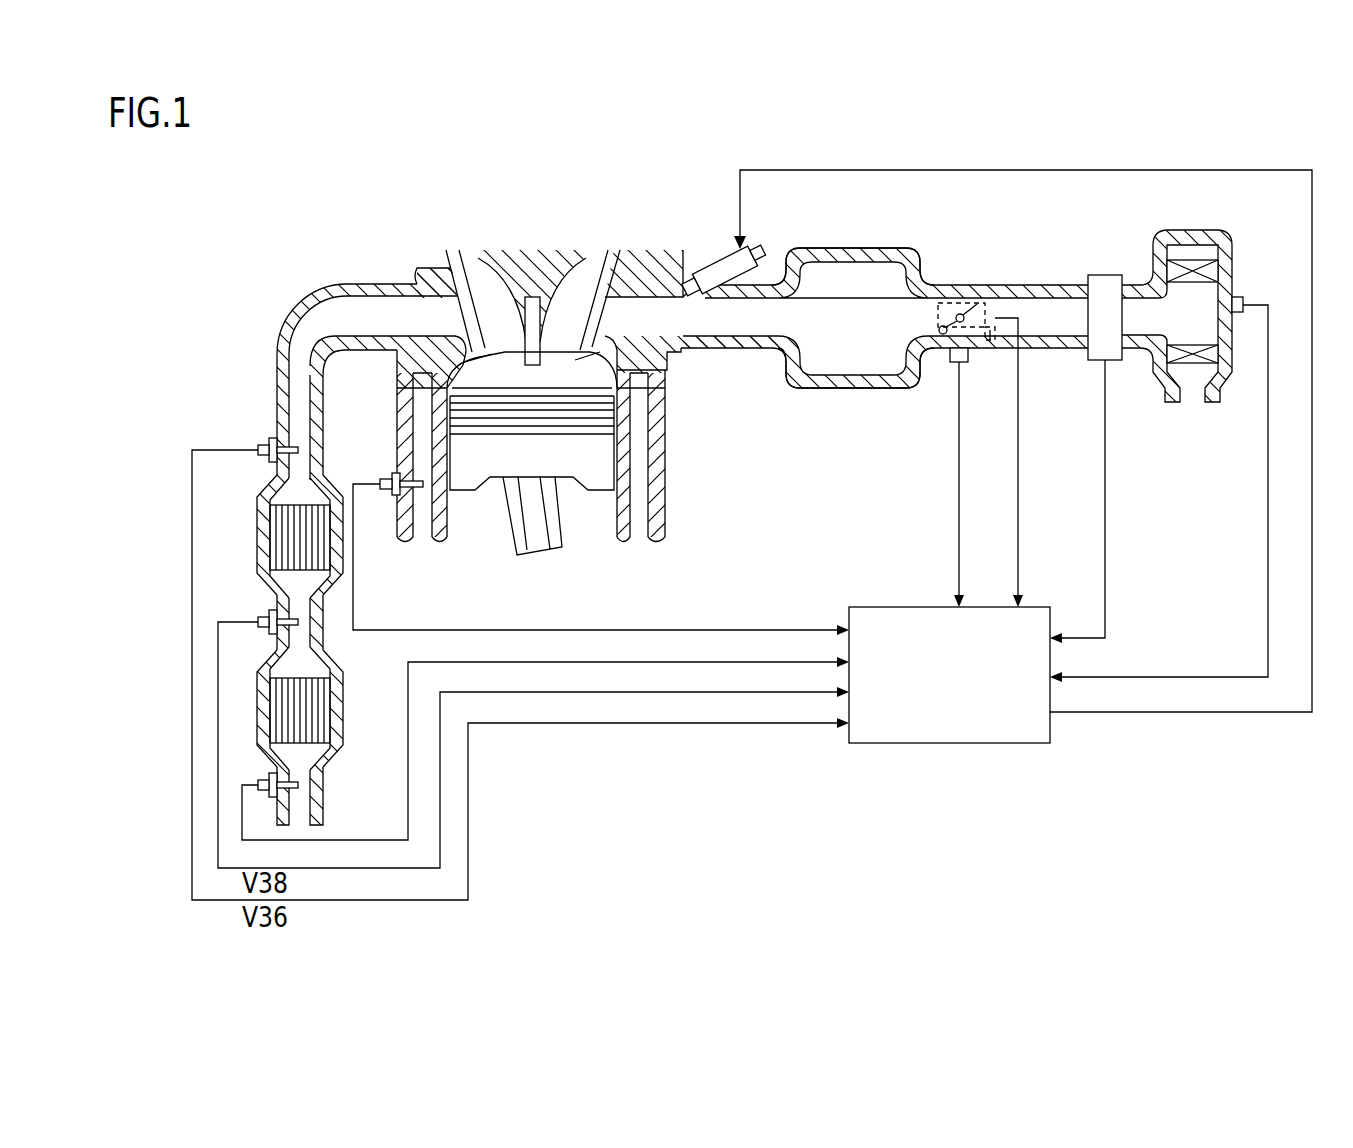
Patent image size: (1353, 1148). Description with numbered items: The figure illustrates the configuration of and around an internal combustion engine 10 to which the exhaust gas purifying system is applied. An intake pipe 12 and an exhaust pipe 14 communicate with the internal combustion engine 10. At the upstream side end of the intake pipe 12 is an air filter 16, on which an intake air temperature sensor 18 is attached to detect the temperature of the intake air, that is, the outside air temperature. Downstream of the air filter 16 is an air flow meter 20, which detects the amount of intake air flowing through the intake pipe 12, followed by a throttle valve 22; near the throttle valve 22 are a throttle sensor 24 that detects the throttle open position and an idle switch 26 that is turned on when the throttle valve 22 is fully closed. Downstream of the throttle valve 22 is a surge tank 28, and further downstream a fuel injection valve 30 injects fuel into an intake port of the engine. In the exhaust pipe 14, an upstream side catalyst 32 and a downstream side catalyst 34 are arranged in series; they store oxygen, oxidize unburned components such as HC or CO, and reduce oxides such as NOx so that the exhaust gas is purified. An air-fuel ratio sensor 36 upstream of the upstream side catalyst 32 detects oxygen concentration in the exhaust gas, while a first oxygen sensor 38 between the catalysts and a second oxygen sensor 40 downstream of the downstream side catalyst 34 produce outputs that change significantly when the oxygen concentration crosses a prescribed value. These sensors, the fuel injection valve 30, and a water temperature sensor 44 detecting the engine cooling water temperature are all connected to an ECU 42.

The internal combustion engine 10 is at (668, 507).
The intake pipe 12 is at (922, 278).
The exhaust pipe 14 is at (298, 308).
The air filter 16 is at (1185, 240).
The intake air temperature sensor 18 is at (1240, 297).
The air flow meter 20 is at (1102, 275).
The throttle valve 22 is at (963, 312).
The throttle sensor 24 is at (989, 342).
The idle switch 26 is at (951, 366).
The surge tank 28 is at (836, 248).
The fuel injection valve 30 is at (721, 256).
The upstream side catalyst 32 is at (257, 530).
The downstream side catalyst 34 is at (343, 705).
The air-fuel ratio sensor 36 is at (270, 437).
The first oxygen sensor 38 is at (268, 614).
The second oxygen sensor 40 is at (268, 775).
The ECU 42 is at (877, 745).
The water temperature sensor 44 is at (394, 474).